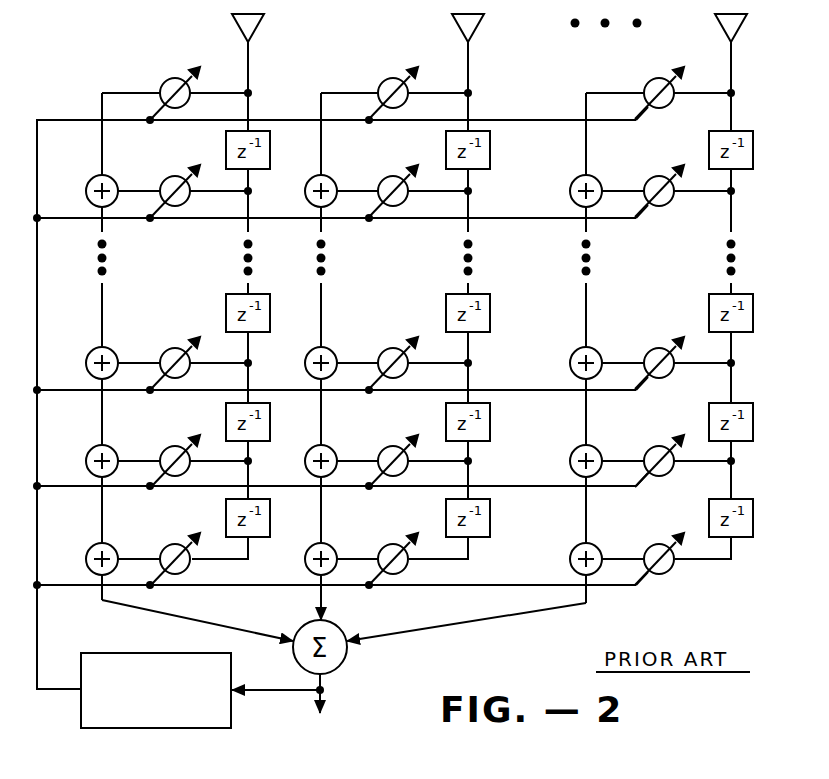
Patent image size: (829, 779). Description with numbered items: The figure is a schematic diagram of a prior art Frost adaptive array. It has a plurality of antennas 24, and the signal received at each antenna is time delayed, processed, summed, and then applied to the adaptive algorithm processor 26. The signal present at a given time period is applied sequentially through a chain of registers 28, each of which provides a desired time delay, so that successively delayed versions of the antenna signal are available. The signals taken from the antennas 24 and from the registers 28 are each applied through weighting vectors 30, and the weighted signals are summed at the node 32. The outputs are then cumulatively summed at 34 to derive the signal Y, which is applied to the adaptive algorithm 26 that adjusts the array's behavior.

The antennas 24 is at (462, 22).
The adaptive algorithm processor 26 is at (81, 710).
The registers 28 is at (270, 160).
The weighting vectors 30 is at (163, 82).
The node 32 is at (312, 178).
The cumulative summing point 34 is at (252, 194).